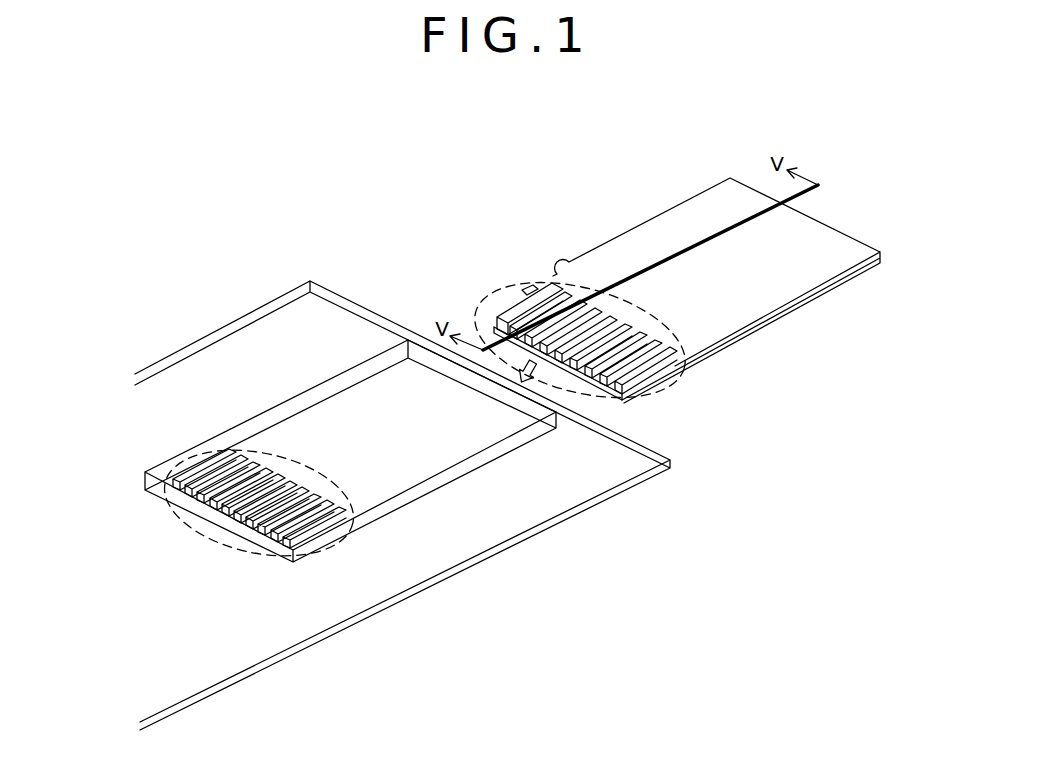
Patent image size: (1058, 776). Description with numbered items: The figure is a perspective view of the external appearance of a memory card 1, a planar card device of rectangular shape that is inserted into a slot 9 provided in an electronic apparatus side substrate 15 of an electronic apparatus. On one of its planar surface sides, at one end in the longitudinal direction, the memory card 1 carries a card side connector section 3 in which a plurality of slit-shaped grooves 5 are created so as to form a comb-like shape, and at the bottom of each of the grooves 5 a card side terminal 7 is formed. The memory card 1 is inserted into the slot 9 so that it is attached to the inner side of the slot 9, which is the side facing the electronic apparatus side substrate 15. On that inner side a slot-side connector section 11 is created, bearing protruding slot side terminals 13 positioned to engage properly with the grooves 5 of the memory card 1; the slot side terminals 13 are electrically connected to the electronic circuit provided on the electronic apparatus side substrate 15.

The memory card 1 is at (689, 225).
The card side connector section 3 is at (600, 313).
The grooves 5 is at (557, 296).
The card side terminal 7 is at (522, 317).
The slot 9 is at (466, 437).
The slot-side connector section 11 is at (354, 545).
The slot side terminals 13 is at (312, 521).
The electronic apparatus side substrate 15 is at (196, 663).